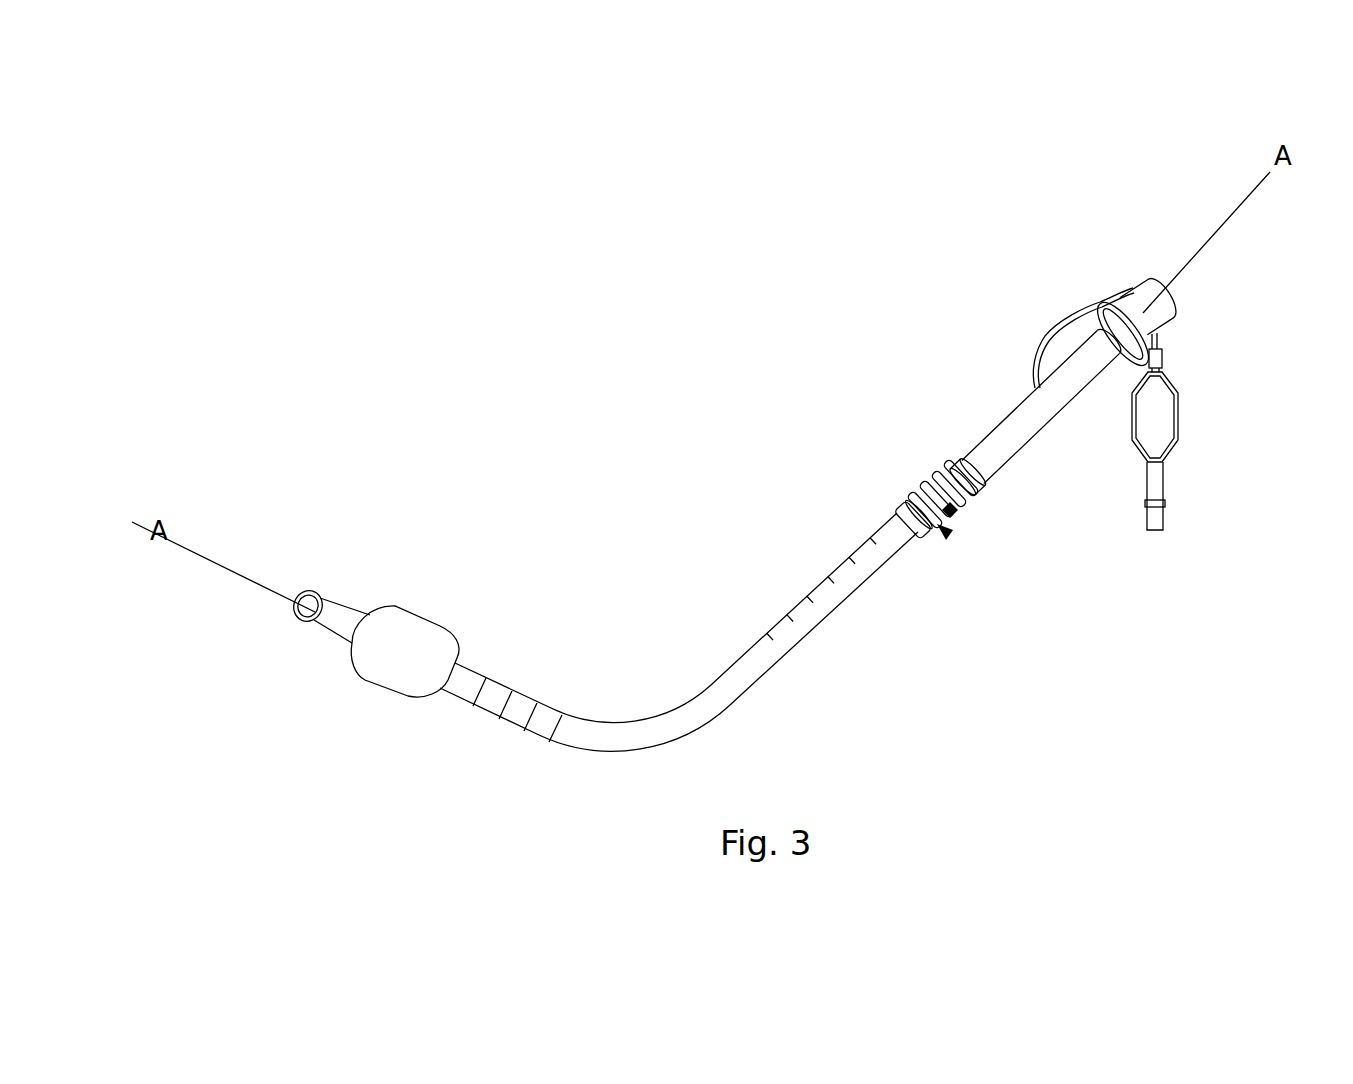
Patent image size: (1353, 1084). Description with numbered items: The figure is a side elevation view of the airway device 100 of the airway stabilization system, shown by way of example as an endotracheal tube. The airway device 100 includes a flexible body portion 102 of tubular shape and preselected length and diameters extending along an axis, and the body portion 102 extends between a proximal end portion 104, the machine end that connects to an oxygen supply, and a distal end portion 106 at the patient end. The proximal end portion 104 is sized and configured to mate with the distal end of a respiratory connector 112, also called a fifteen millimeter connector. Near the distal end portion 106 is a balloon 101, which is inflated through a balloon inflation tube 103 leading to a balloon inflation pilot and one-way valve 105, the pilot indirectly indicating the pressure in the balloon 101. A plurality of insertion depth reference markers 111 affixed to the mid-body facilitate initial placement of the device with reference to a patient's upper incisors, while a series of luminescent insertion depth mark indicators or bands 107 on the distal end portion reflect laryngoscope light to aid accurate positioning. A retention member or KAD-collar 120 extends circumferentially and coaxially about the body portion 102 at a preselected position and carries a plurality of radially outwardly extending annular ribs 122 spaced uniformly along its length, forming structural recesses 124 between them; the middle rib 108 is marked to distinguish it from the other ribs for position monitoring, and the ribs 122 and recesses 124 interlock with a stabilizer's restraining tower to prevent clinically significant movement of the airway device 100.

The airway device 100 is at (728, 473).
The balloon 101 is at (377, 655).
The body portion 102 is at (1000, 458).
The balloon inflation tube 103 is at (1067, 323).
The proximal end portion 104 is at (1070, 375).
The balloon inflation pilot and one-way valve 105 is at (1183, 400).
The distal end portion 106 is at (333, 623).
The insertion depth mark indicators or bands 107 is at (543, 712).
The middle rib 108 is at (956, 514).
The insertion depth reference markers 111 is at (828, 617).
The respiratory connector 112 is at (1168, 313).
The KAD-collar 120 is at (948, 534).
The ribs 122 is at (903, 500).
The structural recesses 124 is at (928, 480).